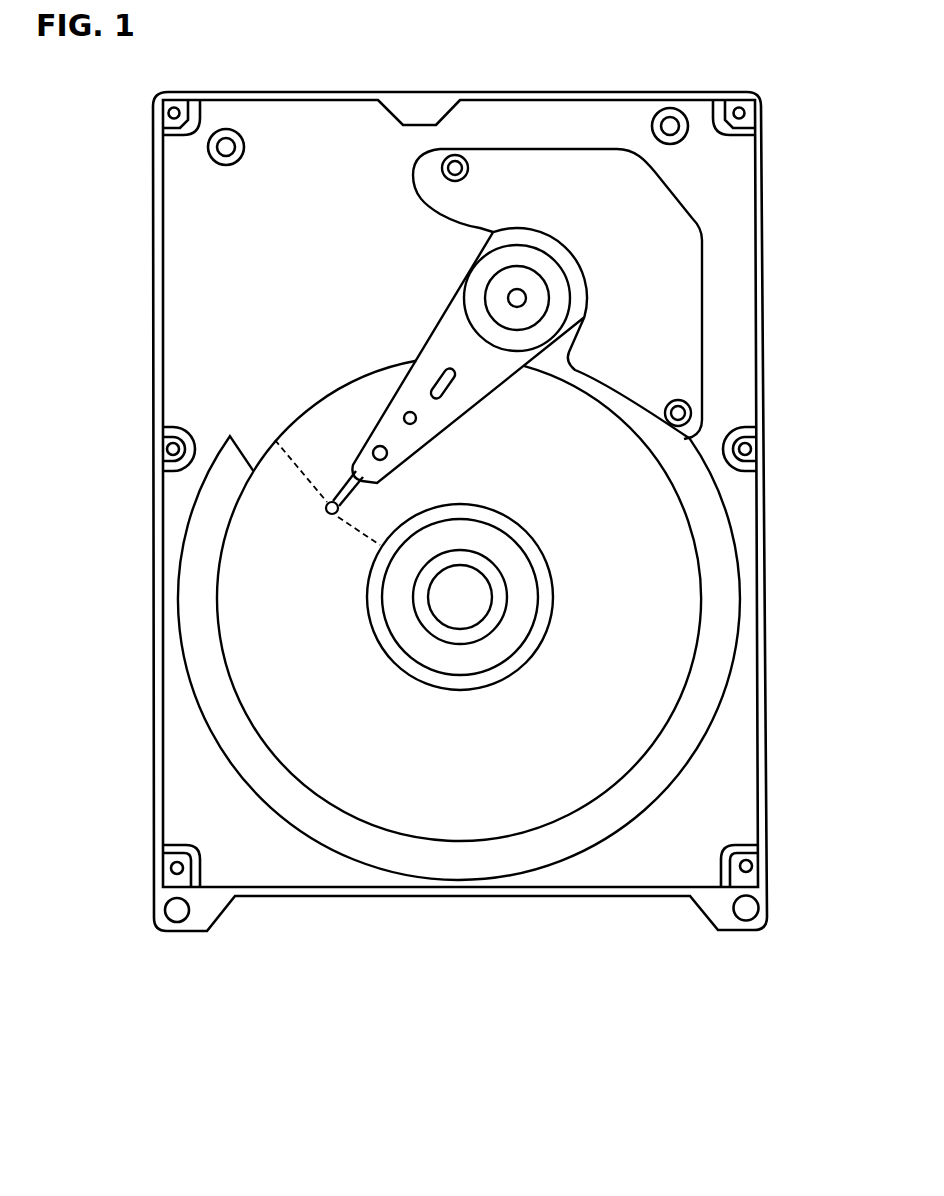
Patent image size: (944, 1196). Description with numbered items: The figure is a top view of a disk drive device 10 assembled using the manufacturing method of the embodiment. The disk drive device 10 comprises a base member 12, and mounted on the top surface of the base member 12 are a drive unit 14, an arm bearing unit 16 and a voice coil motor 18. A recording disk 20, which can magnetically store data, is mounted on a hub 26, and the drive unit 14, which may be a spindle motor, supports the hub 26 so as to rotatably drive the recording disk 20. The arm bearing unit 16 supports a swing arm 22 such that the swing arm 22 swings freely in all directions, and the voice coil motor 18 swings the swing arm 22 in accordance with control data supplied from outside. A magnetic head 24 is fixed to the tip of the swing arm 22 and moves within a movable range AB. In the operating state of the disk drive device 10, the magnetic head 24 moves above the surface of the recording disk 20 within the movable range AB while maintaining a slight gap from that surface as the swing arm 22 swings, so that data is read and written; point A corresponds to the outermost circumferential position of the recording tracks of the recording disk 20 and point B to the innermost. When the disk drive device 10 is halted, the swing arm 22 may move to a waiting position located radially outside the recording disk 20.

The disk drive device 10 is at (447, 1026).
The base member 12 is at (764, 198).
The drive unit 14 is at (548, 561).
The arm bearing unit 16 is at (567, 278).
The voice coil motor 18 is at (663, 190).
The recording disk 20 is at (670, 628).
The swing arm 22 is at (426, 345).
The magnetic head 24 is at (327, 511).
The hub 26 is at (512, 635).